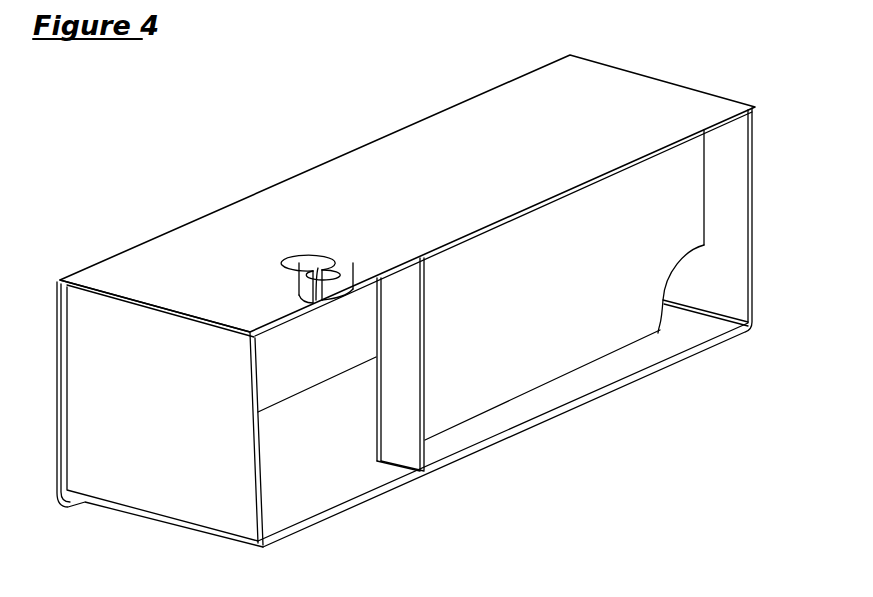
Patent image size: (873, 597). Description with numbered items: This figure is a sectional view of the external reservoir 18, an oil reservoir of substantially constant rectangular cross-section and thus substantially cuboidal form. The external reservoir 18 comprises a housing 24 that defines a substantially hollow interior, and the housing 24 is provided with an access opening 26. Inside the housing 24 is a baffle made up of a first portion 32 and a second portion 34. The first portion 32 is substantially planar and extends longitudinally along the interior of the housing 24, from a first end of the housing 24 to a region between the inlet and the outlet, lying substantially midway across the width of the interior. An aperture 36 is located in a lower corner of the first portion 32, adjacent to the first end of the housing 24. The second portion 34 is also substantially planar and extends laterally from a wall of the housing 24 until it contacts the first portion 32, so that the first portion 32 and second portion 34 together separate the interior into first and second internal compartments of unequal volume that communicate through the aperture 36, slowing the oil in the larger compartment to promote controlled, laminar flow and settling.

The external reservoir 18 is at (219, 164).
The housing 24 is at (393, 170).
The access opening 26 is at (302, 262).
The first portion 32 is at (463, 398).
The second portion 34 is at (393, 452).
The aperture 36 is at (693, 280).